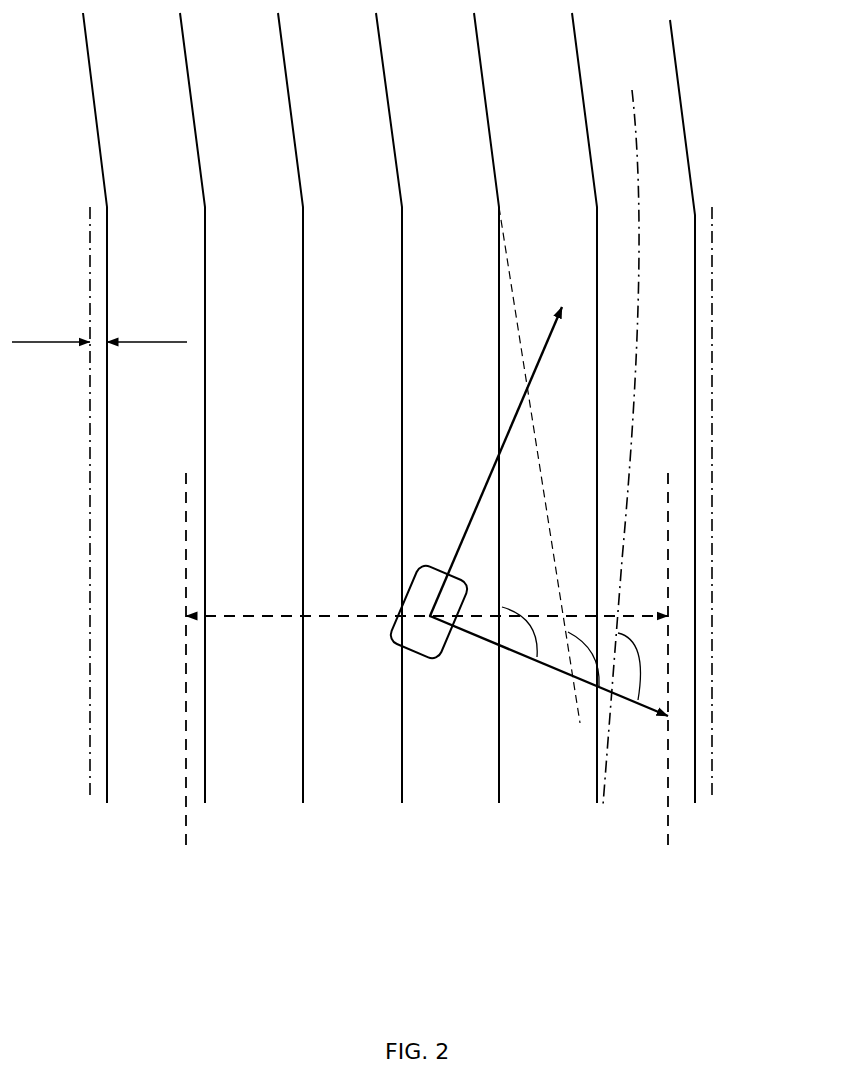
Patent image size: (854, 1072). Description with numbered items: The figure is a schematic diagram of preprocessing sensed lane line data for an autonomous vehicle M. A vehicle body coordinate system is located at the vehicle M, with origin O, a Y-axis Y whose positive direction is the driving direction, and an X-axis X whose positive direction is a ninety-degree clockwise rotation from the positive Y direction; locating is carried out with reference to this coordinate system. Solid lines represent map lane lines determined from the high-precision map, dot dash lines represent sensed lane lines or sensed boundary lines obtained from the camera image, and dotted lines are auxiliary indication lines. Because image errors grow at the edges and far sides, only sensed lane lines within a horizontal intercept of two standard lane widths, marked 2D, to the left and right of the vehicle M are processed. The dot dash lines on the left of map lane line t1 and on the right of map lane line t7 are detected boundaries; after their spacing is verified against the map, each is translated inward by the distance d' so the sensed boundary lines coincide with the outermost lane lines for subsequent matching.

The map lane line t1 is at (100, 426).
The map lane line t7 is at (691, 429).
The distance between boundary and outermost lane line d' is at (99, 327).
The horizontal intercept of two standard lane widths 2D is at (427, 603).
The origin of vehicle body coordinate system O is at (421, 603).
The X-axis X is at (562, 679).
The Y-axis Y is at (506, 449).
The autonomous vehicle M is at (385, 645).